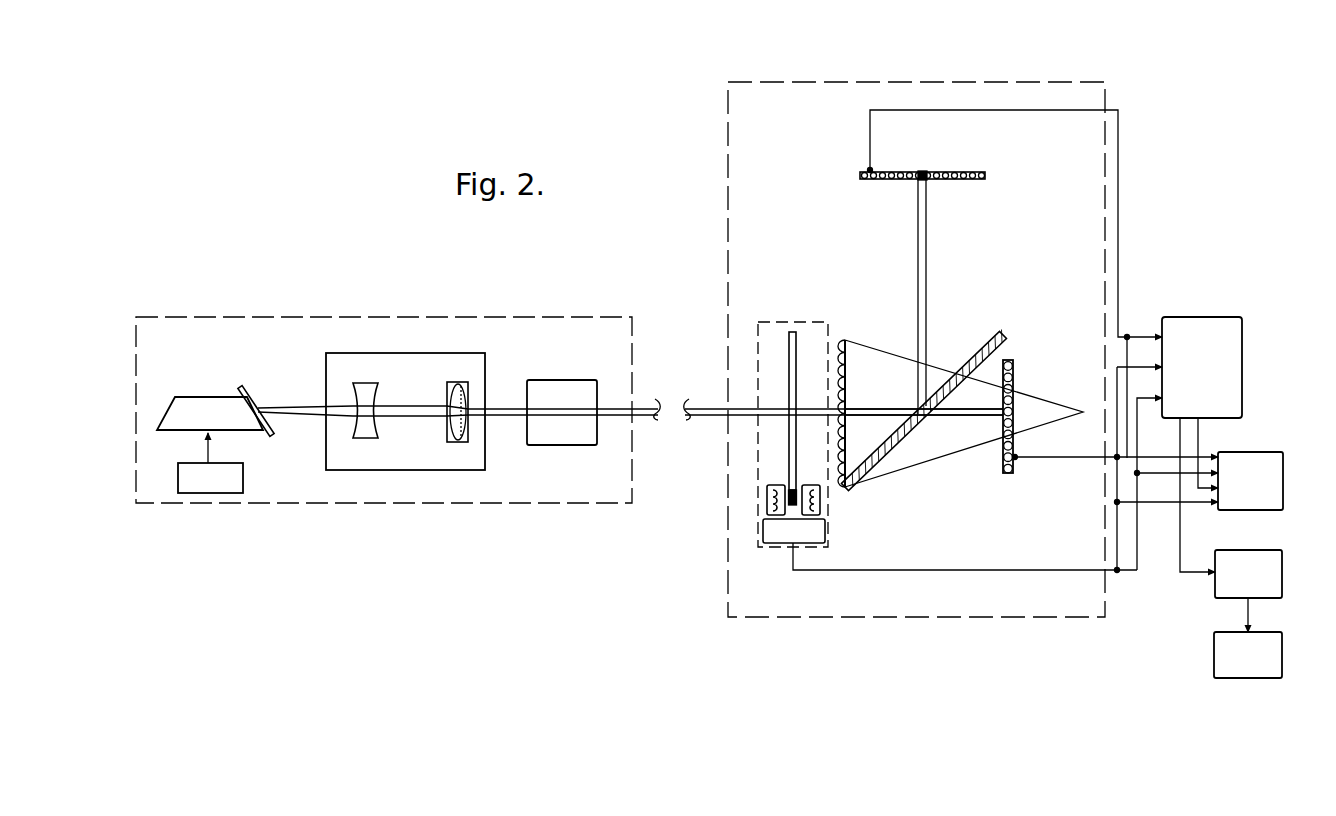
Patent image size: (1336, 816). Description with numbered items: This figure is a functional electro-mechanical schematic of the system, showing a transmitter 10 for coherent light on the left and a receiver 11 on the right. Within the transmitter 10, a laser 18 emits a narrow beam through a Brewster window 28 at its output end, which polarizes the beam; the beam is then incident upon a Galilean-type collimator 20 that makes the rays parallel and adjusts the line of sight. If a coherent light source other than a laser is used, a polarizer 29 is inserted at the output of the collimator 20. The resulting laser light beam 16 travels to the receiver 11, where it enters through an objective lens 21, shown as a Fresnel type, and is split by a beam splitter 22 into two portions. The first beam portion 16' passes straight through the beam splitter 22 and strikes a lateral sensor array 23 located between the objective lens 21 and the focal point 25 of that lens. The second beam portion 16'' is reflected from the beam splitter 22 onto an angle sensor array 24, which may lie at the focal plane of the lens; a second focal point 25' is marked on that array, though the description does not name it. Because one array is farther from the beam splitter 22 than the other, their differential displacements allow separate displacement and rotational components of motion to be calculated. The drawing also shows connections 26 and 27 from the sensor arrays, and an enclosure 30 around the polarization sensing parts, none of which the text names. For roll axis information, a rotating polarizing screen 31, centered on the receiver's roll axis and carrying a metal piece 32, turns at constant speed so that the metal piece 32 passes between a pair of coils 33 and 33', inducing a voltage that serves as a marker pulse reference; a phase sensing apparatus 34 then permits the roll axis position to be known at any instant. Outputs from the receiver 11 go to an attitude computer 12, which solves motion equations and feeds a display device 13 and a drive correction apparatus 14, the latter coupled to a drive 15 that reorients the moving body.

The transmitter 10 is at (362, 318).
The receiver 11 is at (1070, 82).
The attitude computer 12 is at (1187, 318).
The display device 13 is at (1275, 436).
The drive correction apparatus 14 is at (1231, 551).
The drive 15 is at (1218, 632).
The laser light beam 16 is at (630, 395).
The first beam portion 16' is at (924, 427).
The second beam portion 16'' is at (945, 296).
The laser 18 is at (198, 396).
The collimator 20 is at (457, 338).
The objective lens 21 is at (846, 344).
The beam splitter 22 is at (971, 359).
The lateral sensor array 23 is at (1014, 376).
The angle sensor array 24 is at (965, 181).
The focal point 25 is at (969, 413).
The focal point F on detector array 25' is at (964, 160).
The detector output lead 26 is at (869, 133).
The detector output lead 27 is at (1074, 459).
The Brewster window 28 is at (253, 397).
The polarizer 29 is at (592, 382).
The polarization sensor 30 is at (767, 321).
The rotating polarizing screen 31 is at (797, 372).
The metal piece 32 is at (797, 489).
The coil 33 is at (759, 500).
The coil 33' is at (830, 500).
The phase sensing apparatus 34 is at (816, 545).